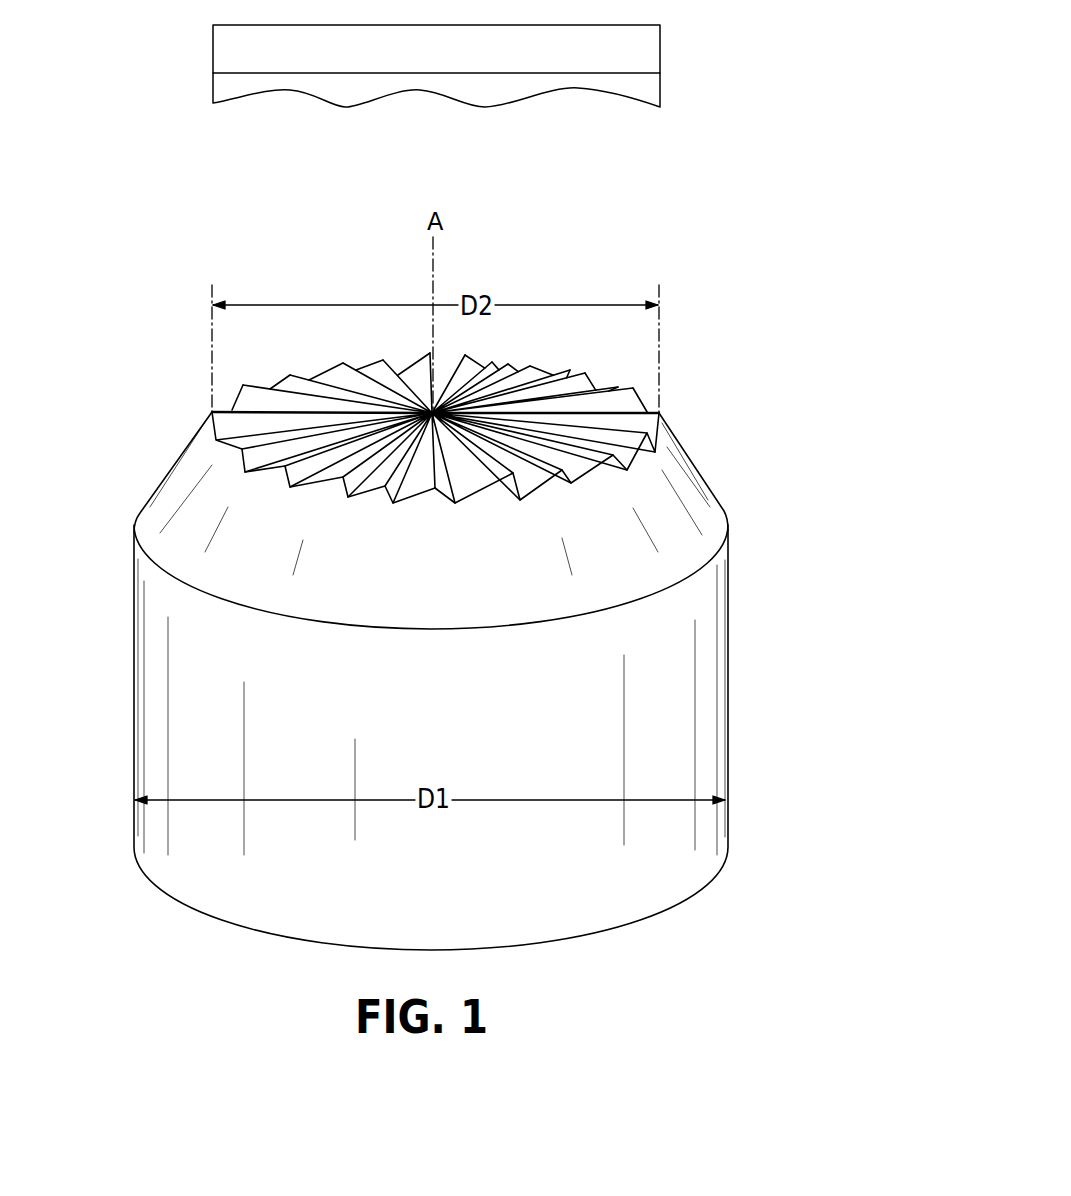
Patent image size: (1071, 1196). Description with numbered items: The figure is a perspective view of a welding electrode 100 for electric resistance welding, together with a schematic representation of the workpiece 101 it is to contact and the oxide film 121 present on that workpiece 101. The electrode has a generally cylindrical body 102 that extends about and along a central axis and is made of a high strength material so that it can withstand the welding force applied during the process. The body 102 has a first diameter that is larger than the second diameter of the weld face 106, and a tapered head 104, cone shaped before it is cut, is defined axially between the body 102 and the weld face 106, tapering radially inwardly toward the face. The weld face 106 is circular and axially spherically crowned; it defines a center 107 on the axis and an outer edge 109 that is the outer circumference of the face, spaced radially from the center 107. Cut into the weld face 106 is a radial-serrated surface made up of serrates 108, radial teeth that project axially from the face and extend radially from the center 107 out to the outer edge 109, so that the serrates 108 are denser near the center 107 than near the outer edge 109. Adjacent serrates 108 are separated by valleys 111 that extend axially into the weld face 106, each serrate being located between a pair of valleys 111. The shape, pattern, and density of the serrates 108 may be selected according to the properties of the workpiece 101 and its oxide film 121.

The welding electrode 100 is at (150, 345).
The workpiece 101 is at (640, 47).
The oxide film 121 is at (640, 88).
The body 102 is at (670, 733).
The head 104 is at (693, 500).
The weld face 106 is at (613, 428).
The center 107 is at (413, 375).
The serrates 108 is at (243, 472).
The outer edge 109 is at (217, 443).
The valleys 111 is at (453, 490).